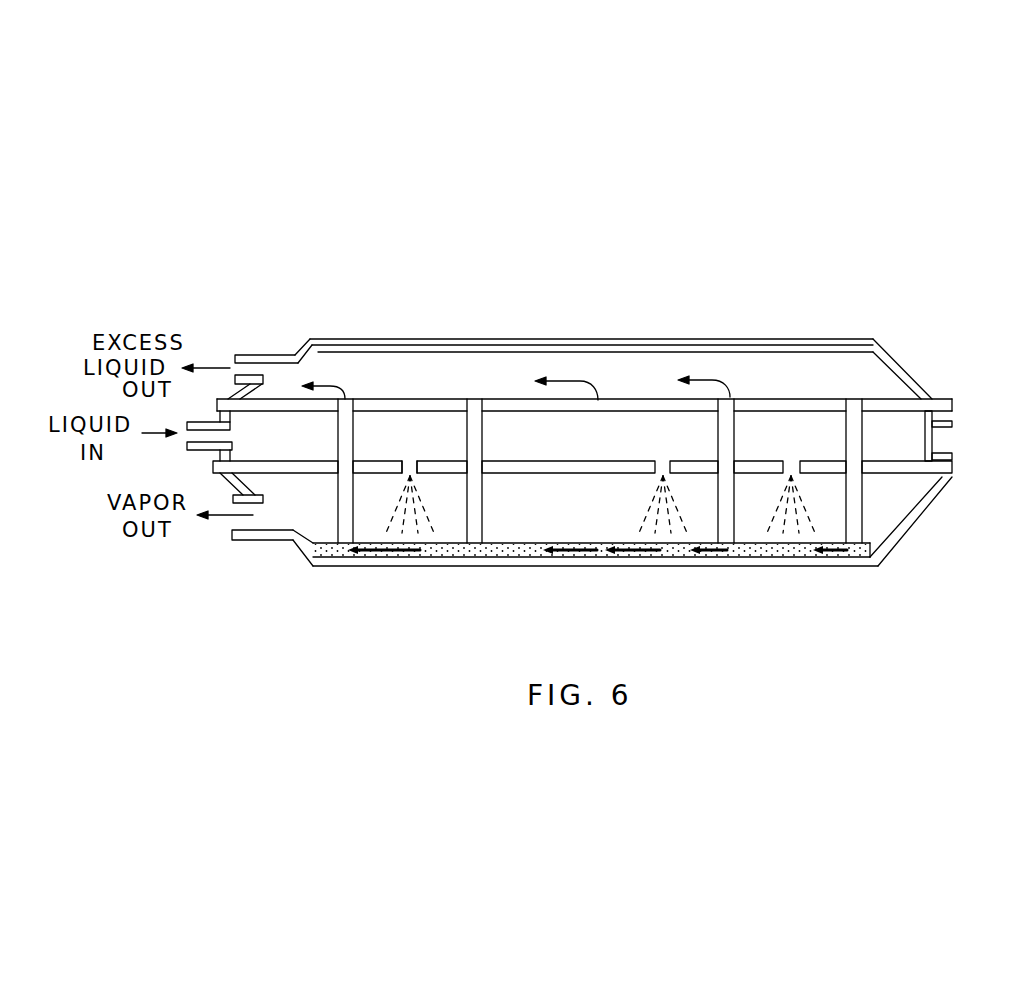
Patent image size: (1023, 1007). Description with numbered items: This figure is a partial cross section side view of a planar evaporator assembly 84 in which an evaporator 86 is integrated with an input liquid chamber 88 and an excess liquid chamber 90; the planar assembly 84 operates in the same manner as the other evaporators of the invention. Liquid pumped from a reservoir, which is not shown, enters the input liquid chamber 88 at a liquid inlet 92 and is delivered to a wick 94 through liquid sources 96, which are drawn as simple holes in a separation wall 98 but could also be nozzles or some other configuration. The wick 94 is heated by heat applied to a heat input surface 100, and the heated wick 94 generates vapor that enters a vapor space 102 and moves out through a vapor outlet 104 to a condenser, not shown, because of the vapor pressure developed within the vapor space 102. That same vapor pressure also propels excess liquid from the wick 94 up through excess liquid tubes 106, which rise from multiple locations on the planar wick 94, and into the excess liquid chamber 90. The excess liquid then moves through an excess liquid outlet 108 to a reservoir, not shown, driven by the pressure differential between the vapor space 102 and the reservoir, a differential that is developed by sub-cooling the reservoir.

The planar evaporator assembly 84 is at (823, 127).
The evaporator 86 is at (445, 507).
The input liquid chamber 88 is at (520, 437).
The excess liquid chamber 90 is at (323, 372).
The liquid inlet 92 is at (210, 447).
The wick 94 is at (730, 553).
The liquid sources 96 is at (303, 553).
The separation wall 98 is at (905, 477).
The heat input surface 100 is at (692, 572).
The vapor space 102 is at (413, 472).
The vapor outlet 104 is at (247, 540).
The excess liquid tubes 106 is at (355, 433).
The excess liquid outlet 108 is at (245, 353).